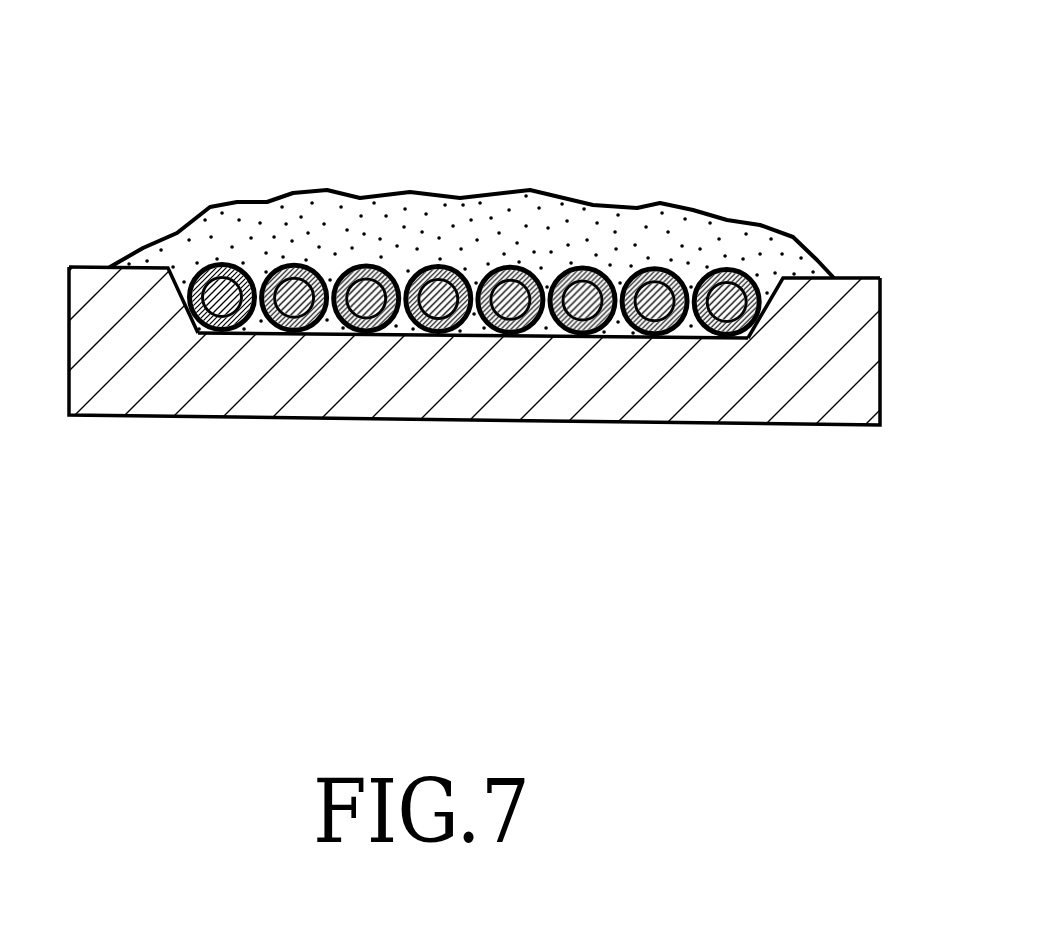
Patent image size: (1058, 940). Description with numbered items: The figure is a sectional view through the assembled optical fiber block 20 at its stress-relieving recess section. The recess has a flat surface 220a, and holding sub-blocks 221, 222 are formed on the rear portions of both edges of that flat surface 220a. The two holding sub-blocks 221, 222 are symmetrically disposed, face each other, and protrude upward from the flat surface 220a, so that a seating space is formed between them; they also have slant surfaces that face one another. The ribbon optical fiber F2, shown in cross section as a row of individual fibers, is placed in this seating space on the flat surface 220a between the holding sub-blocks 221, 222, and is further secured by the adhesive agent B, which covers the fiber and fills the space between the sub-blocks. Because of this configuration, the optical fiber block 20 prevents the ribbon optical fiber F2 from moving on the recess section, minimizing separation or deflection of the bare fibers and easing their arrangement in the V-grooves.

The optical fiber block 20 is at (520, 400).
The holding sub-block 221 is at (93, 303).
The holding sub-block 222 is at (846, 298).
The flat surface 220a is at (423, 339).
The ribbon optical fiber F2 is at (290, 333).
The adhesive agent B is at (453, 235).